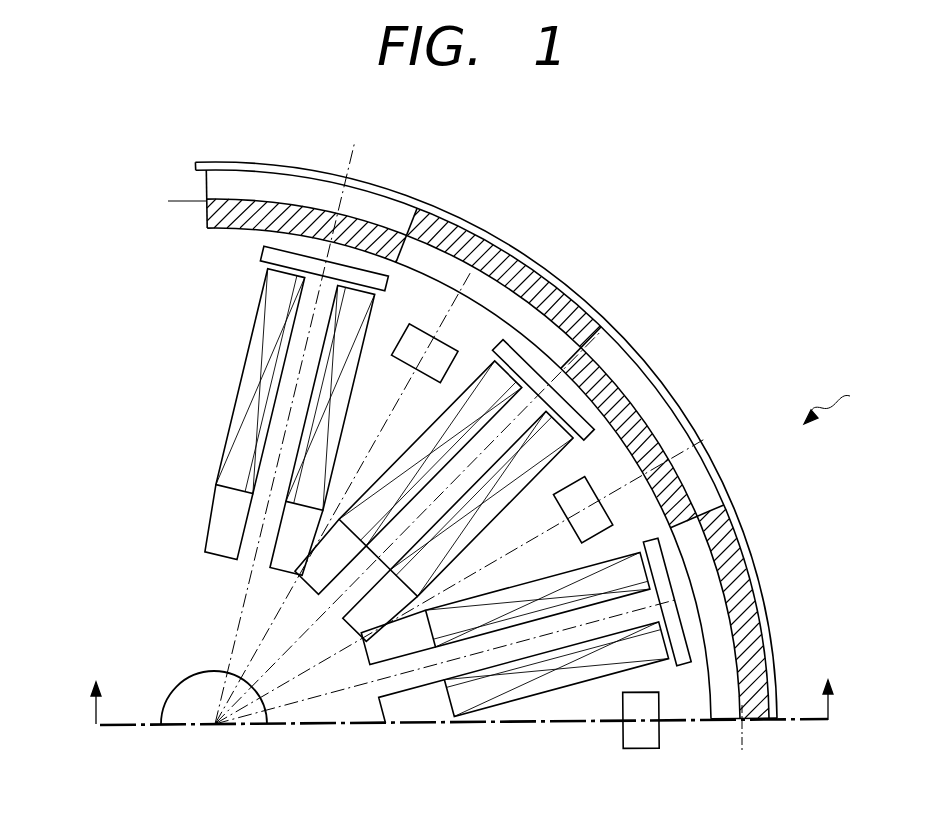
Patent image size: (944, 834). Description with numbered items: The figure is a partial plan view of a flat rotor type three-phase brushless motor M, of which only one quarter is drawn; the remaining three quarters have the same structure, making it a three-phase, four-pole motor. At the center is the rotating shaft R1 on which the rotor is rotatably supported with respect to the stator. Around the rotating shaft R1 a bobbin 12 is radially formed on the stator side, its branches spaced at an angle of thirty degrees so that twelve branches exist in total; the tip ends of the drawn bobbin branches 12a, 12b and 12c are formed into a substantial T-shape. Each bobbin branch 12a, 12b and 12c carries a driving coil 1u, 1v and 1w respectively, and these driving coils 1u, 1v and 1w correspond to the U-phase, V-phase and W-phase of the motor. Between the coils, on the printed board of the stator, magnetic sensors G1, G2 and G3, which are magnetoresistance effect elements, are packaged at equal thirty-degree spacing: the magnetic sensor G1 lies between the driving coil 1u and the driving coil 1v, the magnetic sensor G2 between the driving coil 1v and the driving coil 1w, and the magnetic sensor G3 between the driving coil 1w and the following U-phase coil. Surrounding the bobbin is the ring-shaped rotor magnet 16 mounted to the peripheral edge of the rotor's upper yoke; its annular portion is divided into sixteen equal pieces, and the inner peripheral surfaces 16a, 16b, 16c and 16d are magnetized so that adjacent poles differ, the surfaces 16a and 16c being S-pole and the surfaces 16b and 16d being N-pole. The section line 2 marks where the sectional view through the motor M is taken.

The section line 2— 2 is at (462, 709).
The bobbin 12 is at (205, 612).
The bobbin branch 12a is at (262, 261).
The bobbin branch 12b is at (605, 387).
The bobbin branch 12c is at (683, 652).
The driving coil 1u is at (296, 513).
The driving coil 1v is at (345, 532).
The driving coil 1w is at (430, 630).
The rotor magnet 16 is at (248, 182).
The inner peripheral surface 16a is at (233, 221).
The inner peripheral surface 16b is at (529, 356).
The inner peripheral surface 16c is at (656, 507).
The inner peripheral surface 16d is at (708, 700).
The magnetic sensor G1 is at (412, 343).
The magnetic sensor G2 is at (647, 457).
The magnetic sensor G3 is at (640, 742).
The rotating shaft R1 is at (196, 690).
The three-phase motor M is at (841, 404).